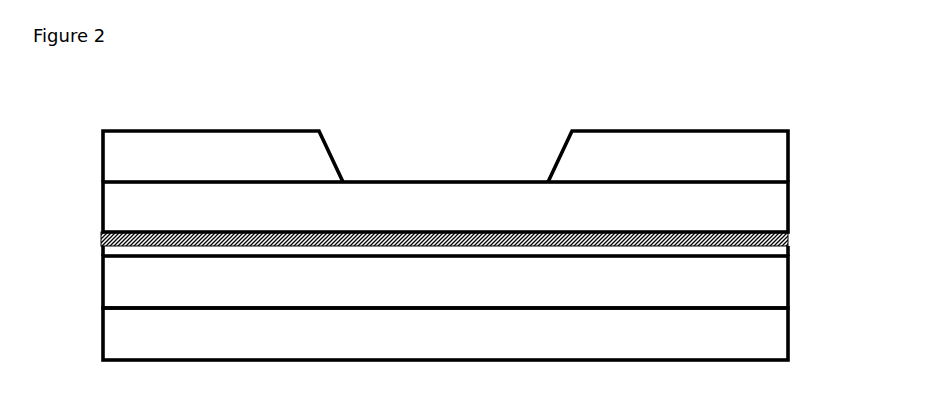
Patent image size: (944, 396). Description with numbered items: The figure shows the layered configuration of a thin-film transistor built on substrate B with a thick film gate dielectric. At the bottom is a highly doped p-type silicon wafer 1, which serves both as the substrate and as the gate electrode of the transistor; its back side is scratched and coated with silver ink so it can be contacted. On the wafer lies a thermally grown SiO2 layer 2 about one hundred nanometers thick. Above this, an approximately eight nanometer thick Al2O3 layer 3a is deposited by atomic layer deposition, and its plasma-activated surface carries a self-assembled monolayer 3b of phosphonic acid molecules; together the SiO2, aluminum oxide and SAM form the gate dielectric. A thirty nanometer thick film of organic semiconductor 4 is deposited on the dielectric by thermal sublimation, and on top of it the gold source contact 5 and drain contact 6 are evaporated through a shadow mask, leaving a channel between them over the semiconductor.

The silicon wafer 1 is at (750, 335).
The thermally grown SiO2 layer 2 is at (750, 286).
The Al2O3 layer 3a is at (484, 234).
The self-assembled monolayer 3b is at (788, 243).
The organic semiconductor 4 is at (157, 209).
The source contact 5 is at (156, 151).
The drain contact 6 is at (750, 152).